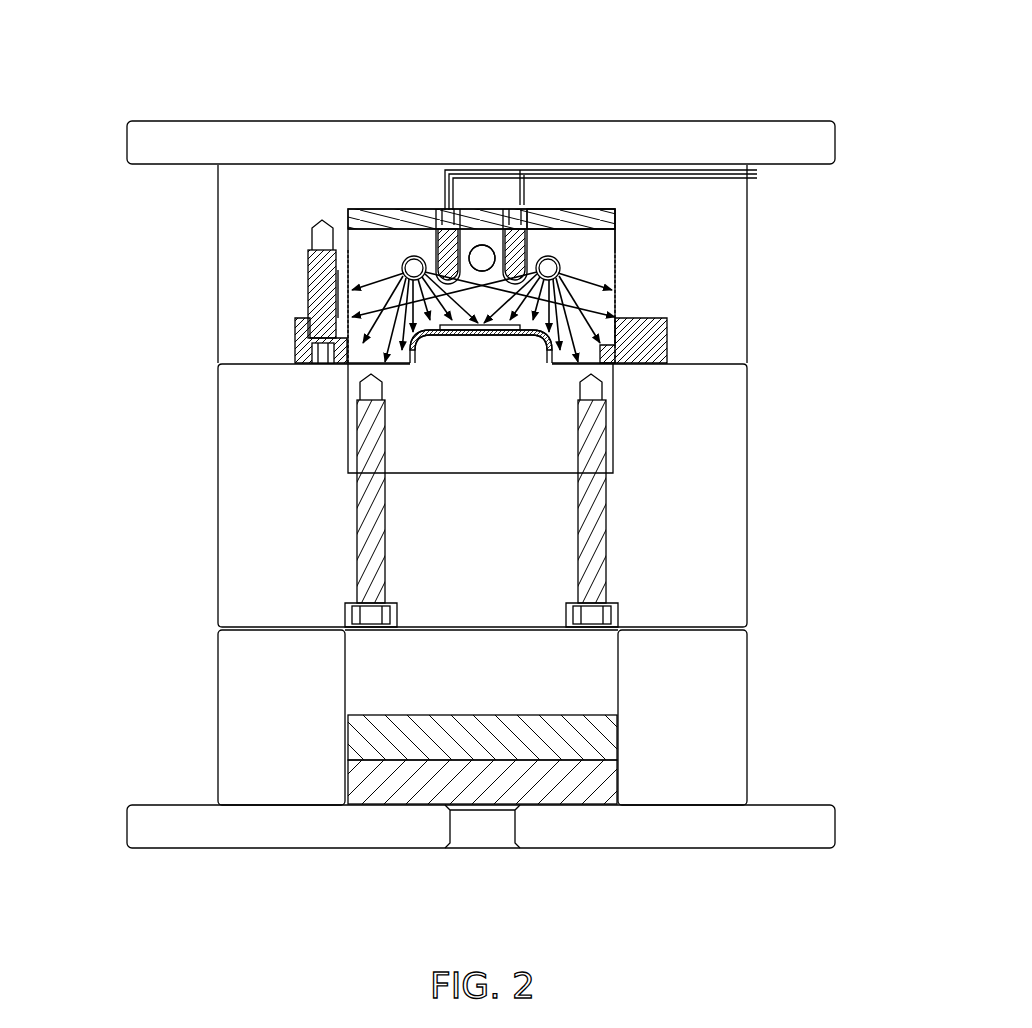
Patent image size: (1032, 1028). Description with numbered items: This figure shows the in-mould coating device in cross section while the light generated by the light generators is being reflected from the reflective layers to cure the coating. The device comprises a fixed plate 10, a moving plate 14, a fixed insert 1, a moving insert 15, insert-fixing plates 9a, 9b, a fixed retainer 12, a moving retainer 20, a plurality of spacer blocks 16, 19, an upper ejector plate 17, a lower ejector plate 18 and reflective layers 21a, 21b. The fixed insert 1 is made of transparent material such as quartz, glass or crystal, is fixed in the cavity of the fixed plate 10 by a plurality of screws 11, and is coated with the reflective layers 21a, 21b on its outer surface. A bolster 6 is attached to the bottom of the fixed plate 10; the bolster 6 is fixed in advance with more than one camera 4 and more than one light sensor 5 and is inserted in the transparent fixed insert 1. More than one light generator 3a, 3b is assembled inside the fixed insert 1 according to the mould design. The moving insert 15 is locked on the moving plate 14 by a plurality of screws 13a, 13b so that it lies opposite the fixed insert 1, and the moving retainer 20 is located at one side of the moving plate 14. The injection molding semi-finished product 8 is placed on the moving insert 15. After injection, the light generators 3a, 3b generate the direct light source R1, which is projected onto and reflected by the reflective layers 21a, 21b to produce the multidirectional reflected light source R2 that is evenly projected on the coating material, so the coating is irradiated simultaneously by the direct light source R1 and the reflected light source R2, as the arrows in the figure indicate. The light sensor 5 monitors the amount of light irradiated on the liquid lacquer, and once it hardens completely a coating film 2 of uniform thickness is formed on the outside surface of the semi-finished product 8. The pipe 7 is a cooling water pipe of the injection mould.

The fixed insert 1 is at (360, 240).
The coating film 2 is at (393, 257).
The light generator 3a is at (407, 257).
The light generator 3b is at (549, 256).
The camera 4 is at (447, 223).
The light sensor 5 is at (520, 222).
The bolster 6 is at (597, 217).
The cooling water pipe 7 is at (486, 247).
The injection molding semi-finished product 8 is at (613, 292).
The insert-fixing plate 9a is at (300, 332).
The insert-fixing plate 9b is at (650, 340).
The fixed plate 10 is at (245, 260).
The screw 11 is at (320, 272).
The fixed retainer 12 is at (212, 132).
The screw 13a is at (372, 523).
The screw 13b is at (597, 532).
The moving plate 14 is at (235, 410).
The moving insert 15 is at (505, 403).
The spacer block 16 is at (720, 710).
The upper ejector plate 17 is at (527, 747).
The lower ejector plate 18 is at (423, 795).
The spacer block 19 is at (230, 692).
The moving retainer 20 is at (735, 835).
The reflective layer 21a is at (348, 250).
The reflective layer 21b is at (613, 318).
The direct light source R1 is at (480, 252).
The multidirectional reflected light source R2 is at (365, 302).